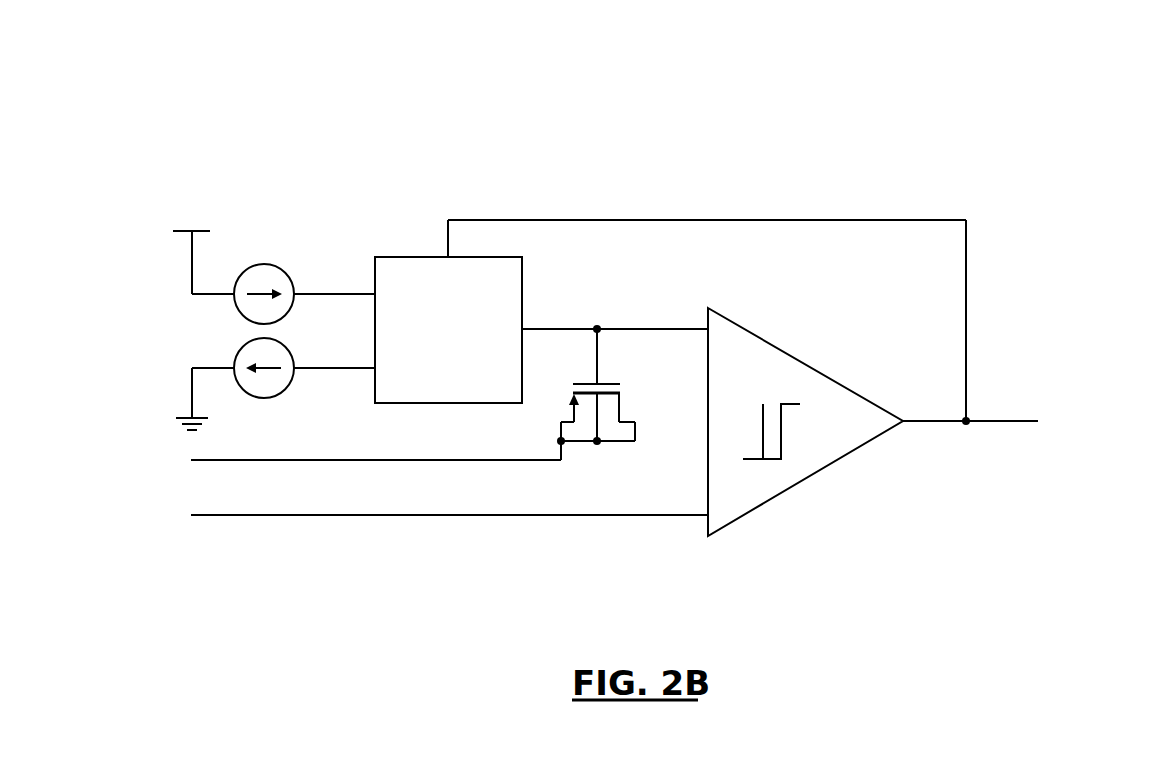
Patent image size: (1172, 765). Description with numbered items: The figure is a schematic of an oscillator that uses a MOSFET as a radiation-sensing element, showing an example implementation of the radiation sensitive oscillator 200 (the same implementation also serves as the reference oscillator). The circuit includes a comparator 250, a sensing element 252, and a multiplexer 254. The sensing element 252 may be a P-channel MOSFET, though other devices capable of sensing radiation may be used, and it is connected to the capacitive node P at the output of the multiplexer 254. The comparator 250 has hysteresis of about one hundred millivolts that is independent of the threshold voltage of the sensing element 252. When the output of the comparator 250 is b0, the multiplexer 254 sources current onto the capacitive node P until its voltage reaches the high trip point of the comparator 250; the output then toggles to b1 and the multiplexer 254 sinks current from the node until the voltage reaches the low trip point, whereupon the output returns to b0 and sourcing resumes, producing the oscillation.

The radiation sensitive oscillator 200 is at (632, 110).
The multiplexer 254 is at (522, 292).
The sensing element 252 is at (619, 412).
The comparator 250 is at (803, 362).